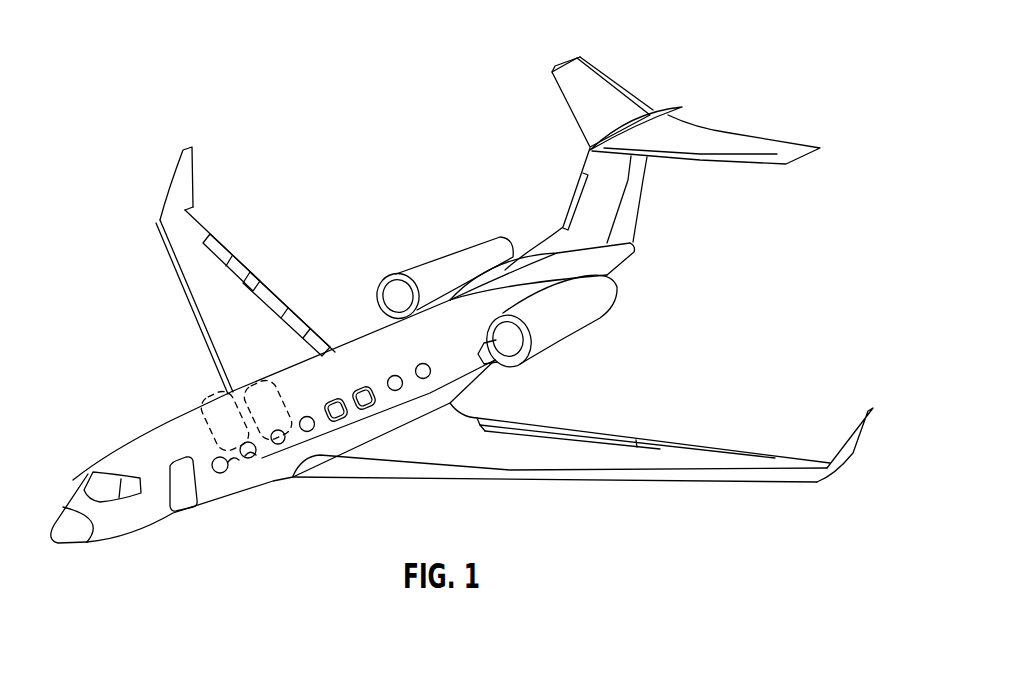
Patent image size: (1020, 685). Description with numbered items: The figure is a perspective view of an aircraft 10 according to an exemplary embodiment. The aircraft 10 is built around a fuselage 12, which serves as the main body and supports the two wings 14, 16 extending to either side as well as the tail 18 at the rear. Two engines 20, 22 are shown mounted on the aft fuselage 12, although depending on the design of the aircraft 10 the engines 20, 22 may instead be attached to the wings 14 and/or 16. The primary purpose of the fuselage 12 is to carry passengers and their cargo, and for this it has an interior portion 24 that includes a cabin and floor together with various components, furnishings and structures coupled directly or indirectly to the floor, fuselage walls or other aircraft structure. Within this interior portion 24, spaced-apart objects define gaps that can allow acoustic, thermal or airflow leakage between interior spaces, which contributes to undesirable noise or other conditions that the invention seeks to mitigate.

The aircraft 10 is at (790, 46).
The fuselage 12 is at (363, 334).
The wing 14 is at (190, 208).
The wing 16 is at (618, 457).
The tail 18 is at (717, 150).
The engine 20 is at (443, 250).
The engine 22 is at (583, 320).
The interior portion 24 is at (268, 455).